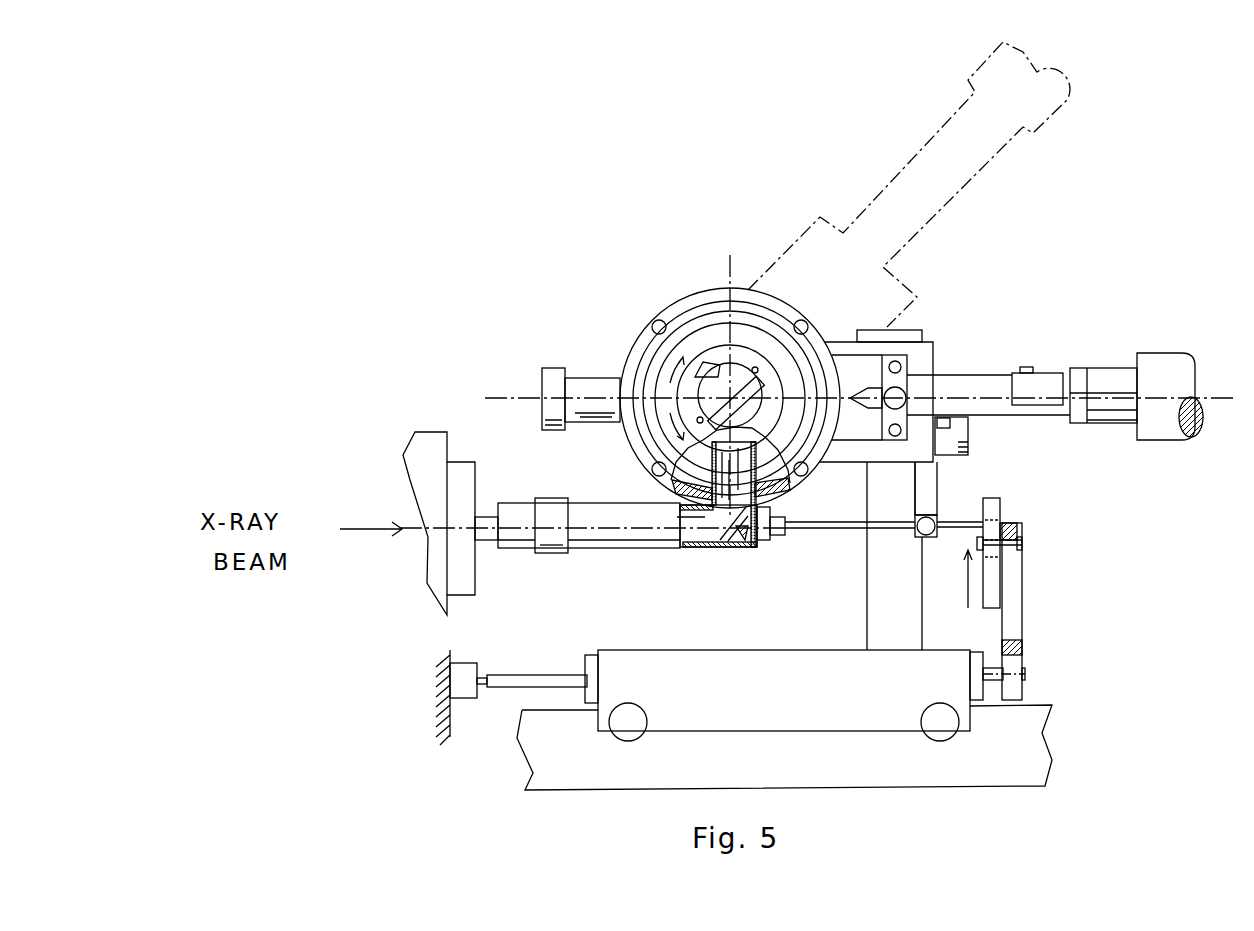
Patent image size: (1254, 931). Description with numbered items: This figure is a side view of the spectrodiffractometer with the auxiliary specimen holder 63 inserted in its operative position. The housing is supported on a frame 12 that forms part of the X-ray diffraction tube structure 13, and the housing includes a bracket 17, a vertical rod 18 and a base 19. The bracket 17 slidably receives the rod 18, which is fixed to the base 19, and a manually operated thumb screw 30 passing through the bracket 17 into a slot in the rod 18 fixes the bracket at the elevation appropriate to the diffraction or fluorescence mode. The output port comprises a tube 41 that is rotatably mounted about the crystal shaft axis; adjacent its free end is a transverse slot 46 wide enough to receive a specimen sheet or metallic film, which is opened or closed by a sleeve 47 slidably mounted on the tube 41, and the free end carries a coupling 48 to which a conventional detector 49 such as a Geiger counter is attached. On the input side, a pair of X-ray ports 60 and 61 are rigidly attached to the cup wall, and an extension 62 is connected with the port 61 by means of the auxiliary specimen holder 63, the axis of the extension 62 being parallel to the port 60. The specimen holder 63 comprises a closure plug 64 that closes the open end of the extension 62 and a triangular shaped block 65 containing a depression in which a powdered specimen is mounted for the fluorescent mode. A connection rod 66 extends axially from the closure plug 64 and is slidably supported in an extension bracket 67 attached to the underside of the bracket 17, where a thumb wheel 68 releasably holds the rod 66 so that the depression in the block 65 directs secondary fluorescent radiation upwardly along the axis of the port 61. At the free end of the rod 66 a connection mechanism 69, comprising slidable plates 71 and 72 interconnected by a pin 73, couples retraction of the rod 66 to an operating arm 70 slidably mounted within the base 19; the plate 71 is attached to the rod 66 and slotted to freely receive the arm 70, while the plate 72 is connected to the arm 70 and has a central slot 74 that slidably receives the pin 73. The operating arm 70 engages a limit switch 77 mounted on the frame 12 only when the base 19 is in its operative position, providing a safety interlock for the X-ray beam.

The frame 12 is at (433, 717).
The X-ray diffraction tube structure 13 is at (430, 427).
The bracket 17 is at (935, 352).
The rod 18 is at (875, 637).
The base 19 is at (653, 657).
The thumb screw 30 is at (968, 452).
The tube 41 is at (973, 380).
The transverse slot 46 is at (1070, 373).
The sleeve 47 is at (1048, 377).
The coupling 48 is at (1087, 412).
The detector 49 is at (1152, 432).
The X-ray port 60 is at (595, 359).
The X-ray port 61 is at (785, 493).
The extension 62 is at (630, 556).
The auxiliary specimen holder 63 is at (746, 548).
The closure plug 64 is at (543, 380).
The triangular shaped block 65 is at (515, 540).
The connection rod 66 is at (945, 523).
The extension bracket 67 is at (930, 482).
The thumb wheel 68 is at (927, 530).
The connection mechanism 69 is at (1042, 590).
The operating arm 70 is at (537, 675).
The slidable plate 71 is at (1000, 507).
The slidable plate 72 is at (1022, 603).
The pin 73 is at (1023, 543).
The central slot 74 is at (1015, 630).
The limit switch 77 is at (462, 670).